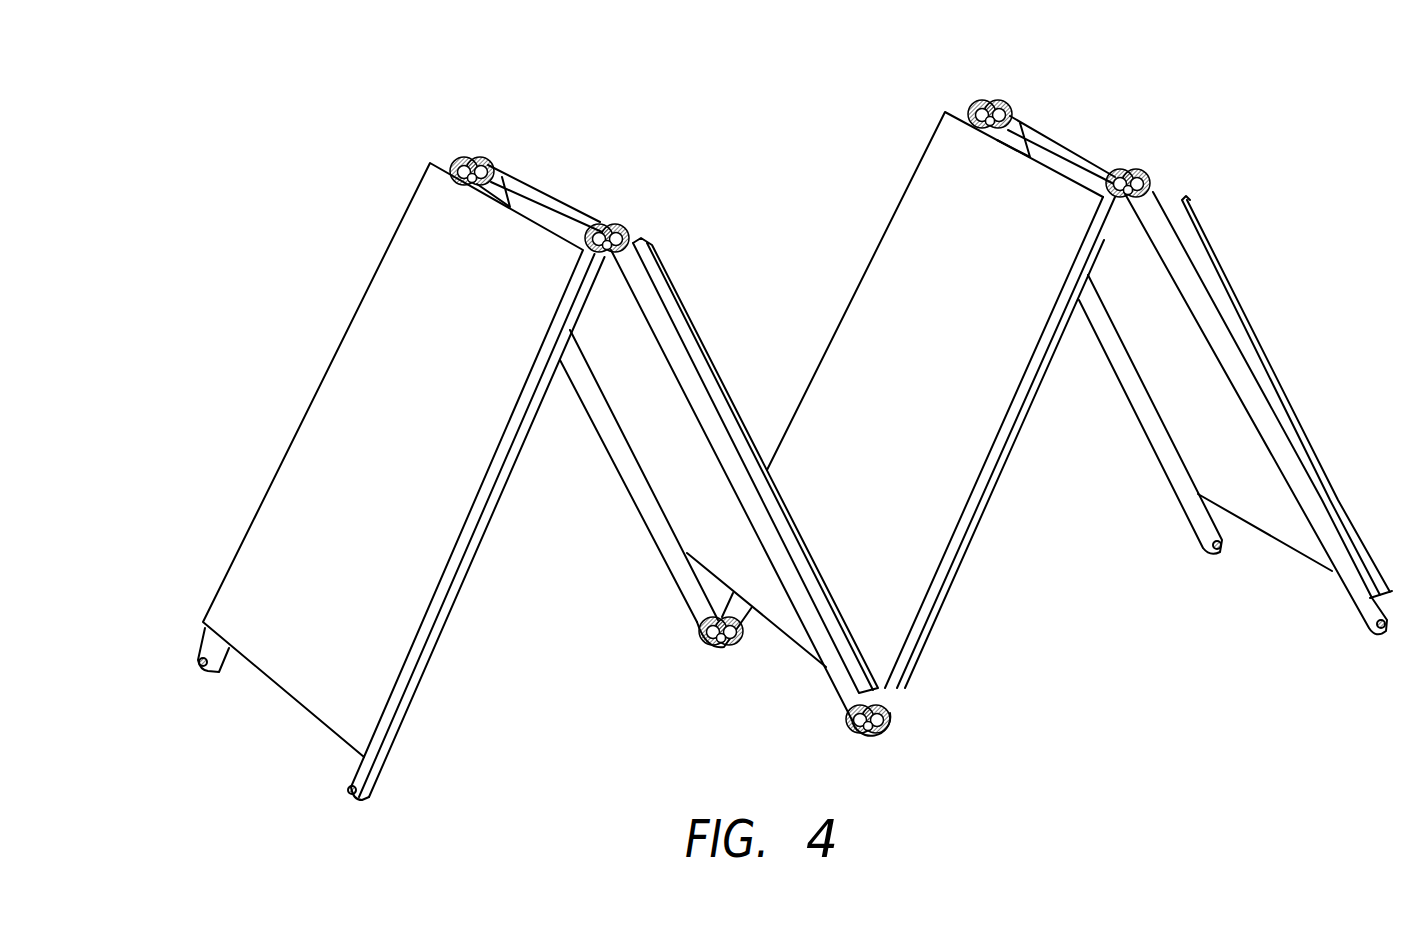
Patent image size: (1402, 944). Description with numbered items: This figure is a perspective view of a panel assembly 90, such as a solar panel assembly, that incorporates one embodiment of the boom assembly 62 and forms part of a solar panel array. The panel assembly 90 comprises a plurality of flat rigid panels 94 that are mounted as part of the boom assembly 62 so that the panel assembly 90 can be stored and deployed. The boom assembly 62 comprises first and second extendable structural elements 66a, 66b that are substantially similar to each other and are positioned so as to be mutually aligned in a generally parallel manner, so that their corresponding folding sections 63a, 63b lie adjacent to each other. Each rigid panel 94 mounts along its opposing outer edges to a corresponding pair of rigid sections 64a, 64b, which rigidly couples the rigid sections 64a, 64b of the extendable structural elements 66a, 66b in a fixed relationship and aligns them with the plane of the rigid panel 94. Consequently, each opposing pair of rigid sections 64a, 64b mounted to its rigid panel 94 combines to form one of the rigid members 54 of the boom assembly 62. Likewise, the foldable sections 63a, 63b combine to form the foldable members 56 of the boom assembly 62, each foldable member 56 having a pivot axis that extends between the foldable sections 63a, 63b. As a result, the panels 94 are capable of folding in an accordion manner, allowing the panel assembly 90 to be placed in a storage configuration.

The panel assembly 90 is at (600, 60).
The rigid member 54 is at (316, 250).
The foldable member 56 is at (410, 150).
The boom assembly 62 is at (440, 686).
The folding section 63a is at (470, 156).
The folding section 63b is at (612, 223).
The rigid section 64a is at (630, 495).
The rigid section 64b is at (828, 667).
The first extendable structural element 66a is at (208, 635).
The second extendable structural element 66b is at (352, 780).
The rigid panel 94 is at (340, 400).